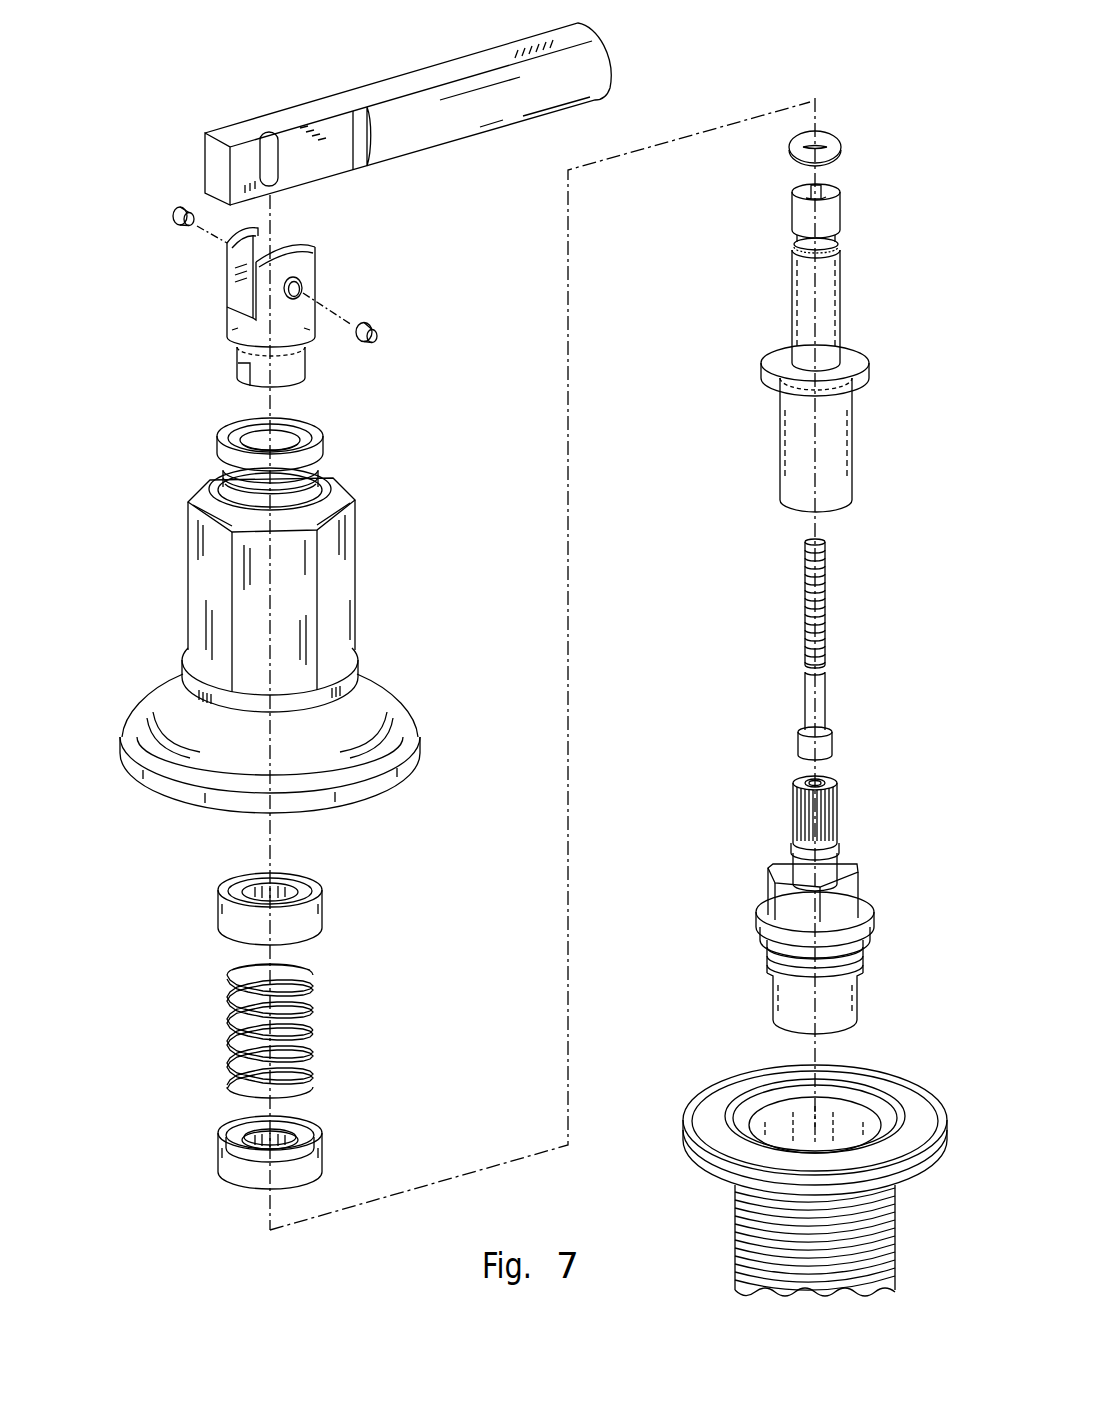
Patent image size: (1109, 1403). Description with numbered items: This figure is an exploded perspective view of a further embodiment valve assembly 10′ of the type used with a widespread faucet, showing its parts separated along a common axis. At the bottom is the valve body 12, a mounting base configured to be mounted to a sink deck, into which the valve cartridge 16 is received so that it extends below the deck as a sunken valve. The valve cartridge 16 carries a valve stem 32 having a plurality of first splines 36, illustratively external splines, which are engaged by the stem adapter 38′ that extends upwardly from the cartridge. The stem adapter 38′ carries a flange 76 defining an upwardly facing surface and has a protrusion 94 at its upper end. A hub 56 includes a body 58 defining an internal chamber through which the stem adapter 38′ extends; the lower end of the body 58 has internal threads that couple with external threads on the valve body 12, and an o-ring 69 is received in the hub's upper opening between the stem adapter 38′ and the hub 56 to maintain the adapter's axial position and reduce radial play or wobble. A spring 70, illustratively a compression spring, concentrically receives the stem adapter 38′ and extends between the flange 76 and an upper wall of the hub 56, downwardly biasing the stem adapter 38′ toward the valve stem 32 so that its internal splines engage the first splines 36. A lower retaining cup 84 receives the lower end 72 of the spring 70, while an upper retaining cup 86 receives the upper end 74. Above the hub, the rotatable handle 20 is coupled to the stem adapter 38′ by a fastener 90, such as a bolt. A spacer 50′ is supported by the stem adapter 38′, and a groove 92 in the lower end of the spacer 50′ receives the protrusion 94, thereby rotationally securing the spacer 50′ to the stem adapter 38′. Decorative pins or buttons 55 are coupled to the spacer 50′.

The valve assembly 10′ is at (884, 110).
The valve body 12 is at (696, 1078).
The valve cartridge 16 is at (782, 876).
The handle 20 is at (278, 118).
The valve stem 32 is at (834, 779).
The first splines 36 is at (870, 784).
The stem adapter 38′ is at (819, 343).
The spacer 50′ is at (316, 262).
The decorative pins or buttons 55 is at (176, 212).
The hub 56 is at (291, 615).
The body 58 is at (208, 592).
The o-ring 69 is at (788, 147).
The spring 70 is at (286, 1028).
The lower end 72 is at (297, 1088).
The upper end 74 is at (253, 965).
The flange 76 is at (762, 368).
The lower retaining cup 84 is at (217, 1158).
The upper retaining cup 86 is at (217, 912).
The fastener 90 is at (805, 588).
The groove 92 is at (245, 370).
The protrusion 94 is at (839, 188).